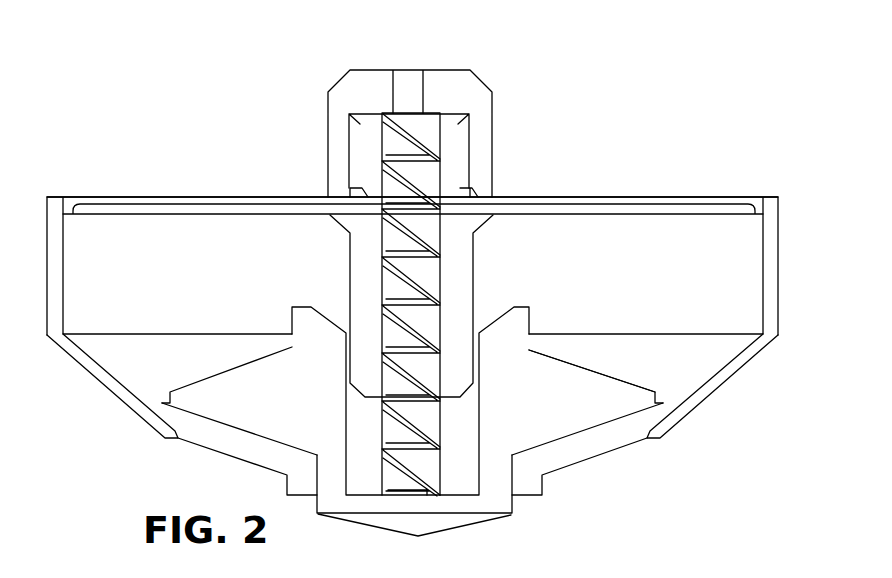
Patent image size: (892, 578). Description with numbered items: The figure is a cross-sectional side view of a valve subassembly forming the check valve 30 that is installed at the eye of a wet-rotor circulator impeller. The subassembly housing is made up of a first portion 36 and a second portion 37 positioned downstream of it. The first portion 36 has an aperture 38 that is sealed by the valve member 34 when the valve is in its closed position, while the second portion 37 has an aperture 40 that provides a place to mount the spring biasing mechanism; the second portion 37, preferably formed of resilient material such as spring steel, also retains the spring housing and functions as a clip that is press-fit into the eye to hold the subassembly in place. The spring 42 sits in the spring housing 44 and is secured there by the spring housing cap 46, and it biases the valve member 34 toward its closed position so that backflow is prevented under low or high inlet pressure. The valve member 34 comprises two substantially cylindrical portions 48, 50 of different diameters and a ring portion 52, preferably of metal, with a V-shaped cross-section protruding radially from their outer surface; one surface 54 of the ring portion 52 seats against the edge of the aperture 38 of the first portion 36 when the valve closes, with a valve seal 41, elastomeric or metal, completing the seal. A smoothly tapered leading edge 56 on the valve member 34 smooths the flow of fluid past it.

The check valve 30 is at (175, 141).
The valve member 34 is at (586, 357).
The first portion 36 is at (88, 365).
The second portion 37 is at (100, 197).
The aperture 38 is at (213, 458).
The aperture 40 is at (536, 190).
The valve seal 41 is at (623, 435).
The spring 42 is at (422, 148).
The spring housing 44 is at (457, 275).
The spring housing cap 46 is at (445, 85).
The substantially cylindrical portion 48 is at (512, 330).
The substantially cylindrical portion 50 is at (497, 492).
The ring portion 52 is at (617, 393).
The surface 54 is at (587, 433).
The leading edge 56 is at (470, 536).